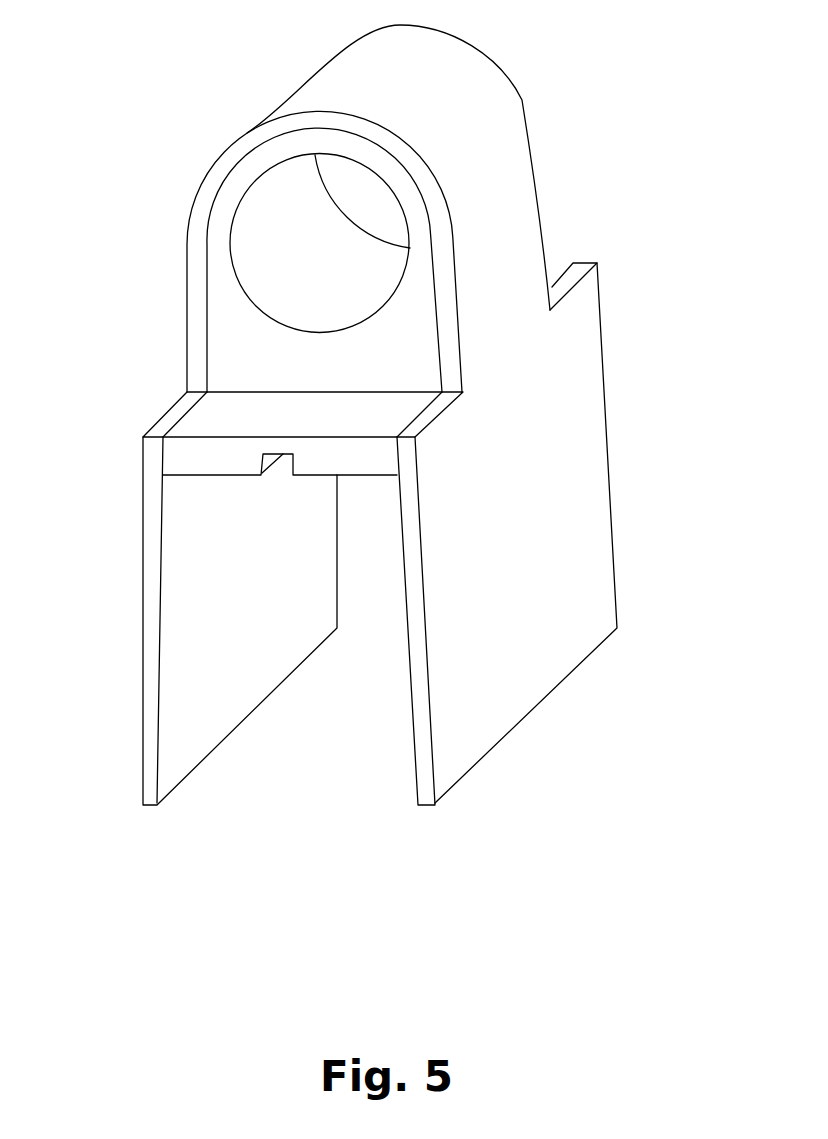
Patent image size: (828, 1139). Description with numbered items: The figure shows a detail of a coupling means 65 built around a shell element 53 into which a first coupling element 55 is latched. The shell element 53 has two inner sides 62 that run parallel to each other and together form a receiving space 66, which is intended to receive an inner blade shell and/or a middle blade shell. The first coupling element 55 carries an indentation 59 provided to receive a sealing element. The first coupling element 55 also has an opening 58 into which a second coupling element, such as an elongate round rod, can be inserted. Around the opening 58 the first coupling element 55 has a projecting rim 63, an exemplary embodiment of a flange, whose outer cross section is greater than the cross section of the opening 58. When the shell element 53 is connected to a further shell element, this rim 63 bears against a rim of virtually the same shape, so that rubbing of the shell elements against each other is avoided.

The shell element 53 is at (540, 631).
The first coupling element 55 is at (254, 411).
The opening 58 is at (283, 224).
The indentation 59 is at (278, 470).
The inner sides 62 is at (192, 713).
The projecting rim 63 is at (398, 182).
The coupling means 65 is at (556, 252).
The receiving space 66 is at (295, 737).